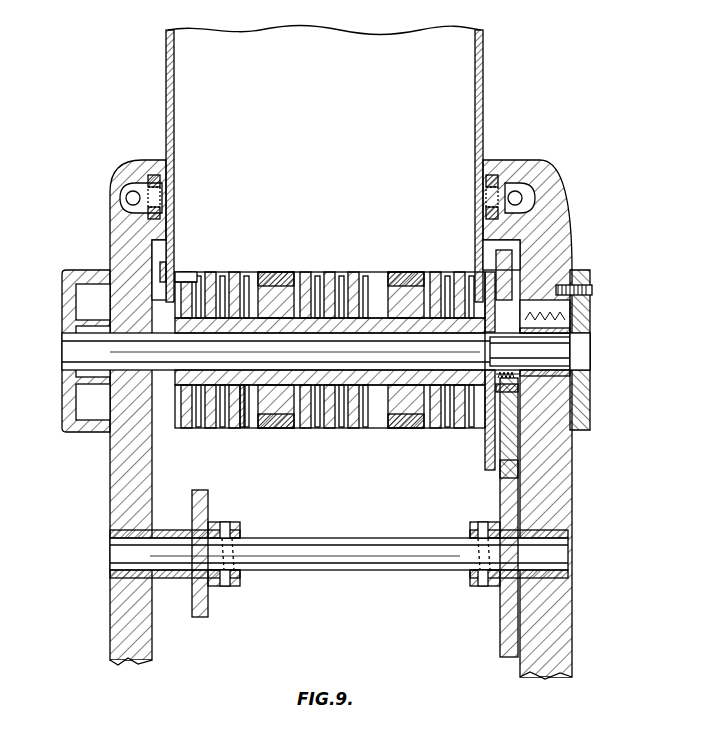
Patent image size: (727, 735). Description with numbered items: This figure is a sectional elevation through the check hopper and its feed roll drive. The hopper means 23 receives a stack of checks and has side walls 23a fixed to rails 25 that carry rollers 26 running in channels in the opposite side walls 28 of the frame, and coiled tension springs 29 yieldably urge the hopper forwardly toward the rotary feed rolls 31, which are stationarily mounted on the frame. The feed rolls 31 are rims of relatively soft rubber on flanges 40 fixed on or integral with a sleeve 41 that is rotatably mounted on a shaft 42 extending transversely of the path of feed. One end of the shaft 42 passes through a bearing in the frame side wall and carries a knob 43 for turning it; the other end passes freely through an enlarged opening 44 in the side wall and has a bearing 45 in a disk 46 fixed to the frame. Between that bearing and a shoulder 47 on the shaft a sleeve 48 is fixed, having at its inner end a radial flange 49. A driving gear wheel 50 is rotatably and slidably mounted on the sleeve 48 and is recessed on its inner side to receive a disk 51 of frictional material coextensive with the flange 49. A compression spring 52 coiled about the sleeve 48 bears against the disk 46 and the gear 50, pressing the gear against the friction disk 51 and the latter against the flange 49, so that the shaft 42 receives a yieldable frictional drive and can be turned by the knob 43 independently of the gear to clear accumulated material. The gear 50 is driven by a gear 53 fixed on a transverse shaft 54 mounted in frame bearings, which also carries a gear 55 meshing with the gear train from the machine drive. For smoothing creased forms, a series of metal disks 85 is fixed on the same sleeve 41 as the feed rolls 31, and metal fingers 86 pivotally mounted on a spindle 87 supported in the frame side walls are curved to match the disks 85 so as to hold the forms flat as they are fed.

The hopper means 23 is at (504, 90).
The side walls 23a is at (166, 120).
The rails 25 is at (162, 183).
The rollers 26 is at (328, 229).
The side walls of the frame 28 is at (110, 214).
The coiled tension springs 29 is at (128, 192).
The rotary feed rolls 31 is at (410, 278).
The flanges 40 is at (268, 395).
The sleeve 41 is at (312, 320).
The shaft 42 is at (262, 333).
The knob 43 is at (62, 300).
The enlarged opening 44 is at (540, 328).
The bearing 45 is at (590, 333).
The disk 46 is at (590, 306).
The shoulder 47 is at (486, 348).
The sleeve 48 is at (548, 336).
The radial flange 49 is at (486, 412).
The driving gear wheel 50 is at (516, 440).
The disk of frictional material 51 is at (500, 405).
The compression spring 52 is at (522, 380).
The gear 53 is at (500, 622).
The transverse shaft 54 is at (404, 546).
The gear 55 is at (208, 504).
The metal disks 85 is at (318, 428).
The metal fingers 86 is at (232, 428).
The spindle 87 is at (182, 278).